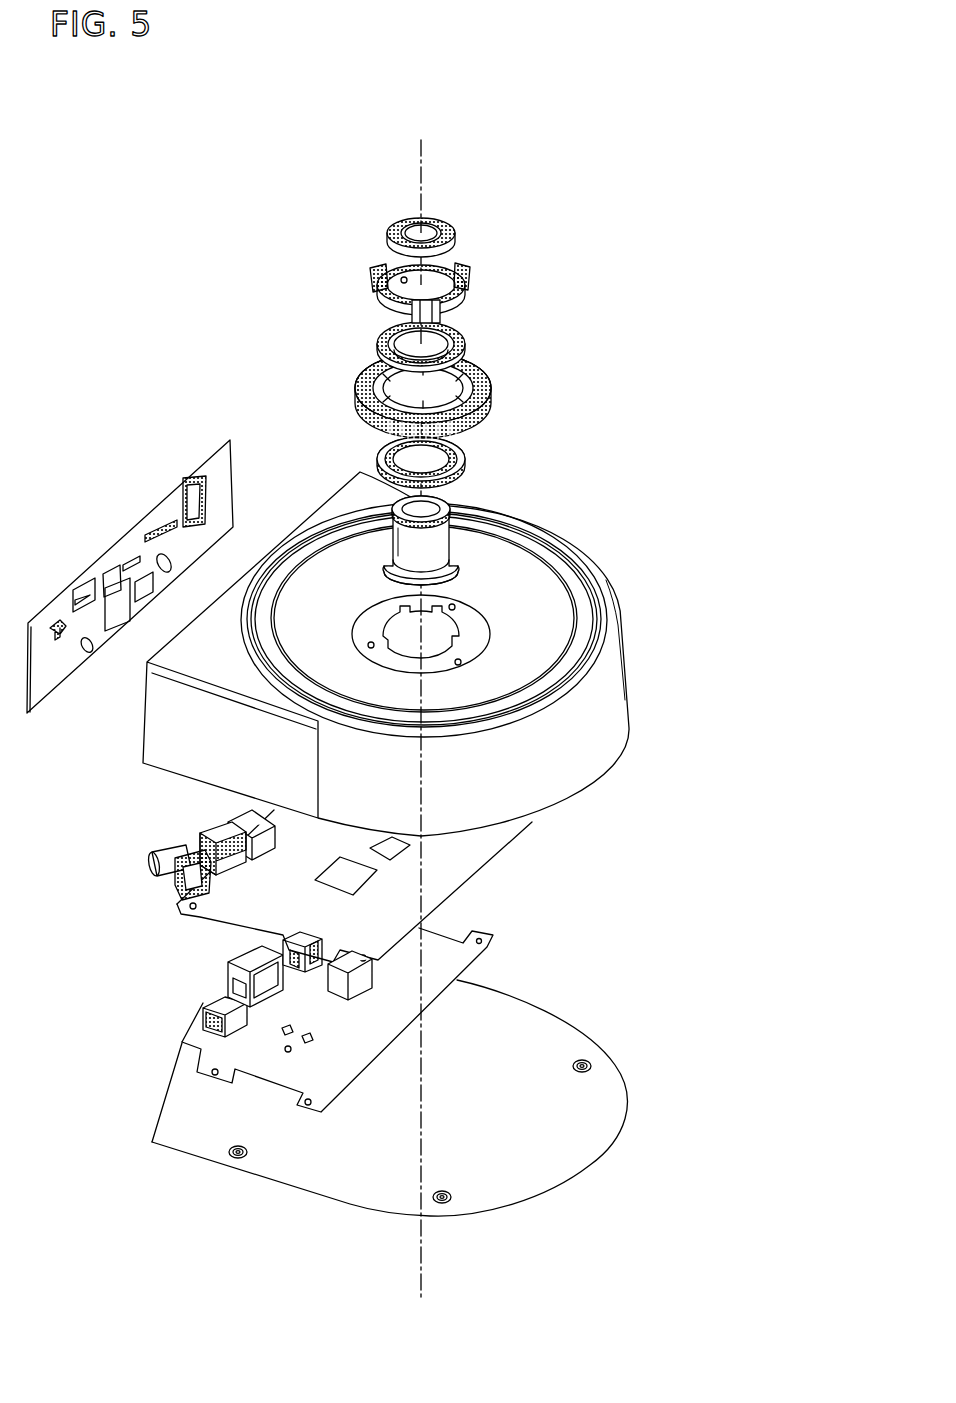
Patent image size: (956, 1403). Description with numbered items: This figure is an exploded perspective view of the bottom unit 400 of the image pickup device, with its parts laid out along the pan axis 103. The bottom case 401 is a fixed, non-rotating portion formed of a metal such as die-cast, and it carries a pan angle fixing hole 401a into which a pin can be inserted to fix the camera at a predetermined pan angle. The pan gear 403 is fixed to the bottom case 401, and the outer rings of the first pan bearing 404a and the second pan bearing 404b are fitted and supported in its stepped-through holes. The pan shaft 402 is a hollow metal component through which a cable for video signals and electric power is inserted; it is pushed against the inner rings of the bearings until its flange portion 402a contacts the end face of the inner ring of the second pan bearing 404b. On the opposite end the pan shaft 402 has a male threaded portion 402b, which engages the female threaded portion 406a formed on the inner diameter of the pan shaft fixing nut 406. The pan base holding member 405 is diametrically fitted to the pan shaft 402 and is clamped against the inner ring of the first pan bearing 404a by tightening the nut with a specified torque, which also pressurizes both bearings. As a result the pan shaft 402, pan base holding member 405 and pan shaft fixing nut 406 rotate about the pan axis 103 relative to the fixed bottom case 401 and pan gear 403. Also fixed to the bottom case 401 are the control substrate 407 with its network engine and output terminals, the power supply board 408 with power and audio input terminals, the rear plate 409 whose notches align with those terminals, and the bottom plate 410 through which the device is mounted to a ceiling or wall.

The pan axis 103 is at (421, 136).
The bottom unit 400 is at (132, 196).
The bottom case 401 is at (620, 702).
The pan angle fixing hole 401a is at (547, 672).
The pan shaft 402 is at (456, 520).
The flange portion 402a is at (437, 542).
The male threaded portion 402b is at (452, 502).
The pan gear 403 is at (478, 410).
The first pan bearing 404a is at (467, 352).
The second pan bearing 404b is at (468, 468).
The pan base holding member 405 is at (468, 296).
The pan shaft fixing nut 406 is at (393, 232).
The female threaded portion 406a is at (407, 226).
The control substrate 407 is at (462, 855).
The power supply board 408 is at (447, 960).
The rear plate 409 is at (103, 573).
The bottom plate 410 is at (306, 1157).